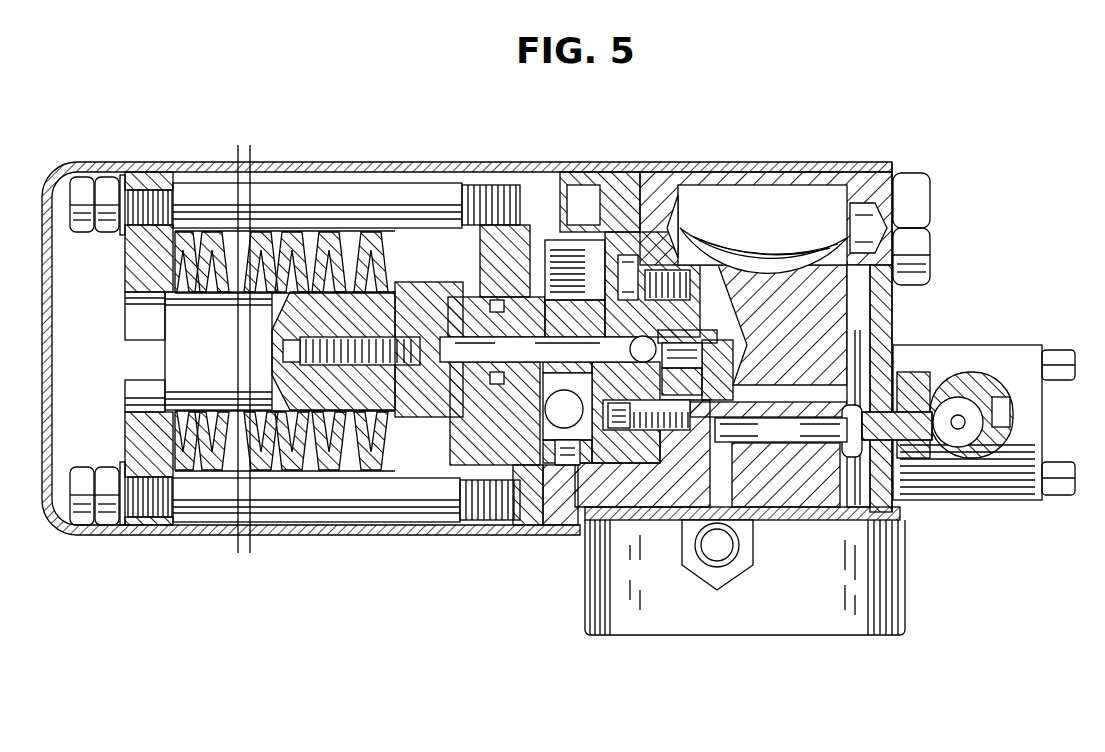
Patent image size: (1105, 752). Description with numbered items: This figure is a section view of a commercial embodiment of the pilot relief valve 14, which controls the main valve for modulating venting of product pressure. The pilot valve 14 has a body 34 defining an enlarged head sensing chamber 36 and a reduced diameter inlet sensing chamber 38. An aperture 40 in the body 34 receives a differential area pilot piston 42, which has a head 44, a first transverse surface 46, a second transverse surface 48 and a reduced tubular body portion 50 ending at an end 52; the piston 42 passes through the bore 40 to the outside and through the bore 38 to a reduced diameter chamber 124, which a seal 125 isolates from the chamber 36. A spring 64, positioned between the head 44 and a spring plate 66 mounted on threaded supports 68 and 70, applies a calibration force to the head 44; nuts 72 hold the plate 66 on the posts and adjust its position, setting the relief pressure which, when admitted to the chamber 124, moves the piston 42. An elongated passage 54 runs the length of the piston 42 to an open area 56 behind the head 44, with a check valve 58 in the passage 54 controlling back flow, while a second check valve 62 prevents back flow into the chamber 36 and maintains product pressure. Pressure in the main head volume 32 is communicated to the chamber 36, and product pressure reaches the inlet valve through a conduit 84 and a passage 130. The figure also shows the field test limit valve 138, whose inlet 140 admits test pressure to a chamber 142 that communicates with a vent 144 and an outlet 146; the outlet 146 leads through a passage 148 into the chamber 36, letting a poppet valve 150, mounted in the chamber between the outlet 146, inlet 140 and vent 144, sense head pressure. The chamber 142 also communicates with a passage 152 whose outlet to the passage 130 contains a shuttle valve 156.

The pilot relief valve 14 is at (303, 562).
The main head volume 32 is at (736, 220).
The body 34 is at (858, 636).
The head sensing chamber 36 is at (547, 462).
The inlet sensing chamber 38 is at (648, 430).
The aperture 40 is at (480, 432).
The differential area pilot piston 42 is at (585, 240).
The head 44 is at (432, 313).
The first transverse surface 46 is at (480, 244).
The second transverse surface 48 is at (551, 495).
The reduced tubular body portion 50 is at (650, 330).
The end 52 is at (825, 300).
The elongated passage 54 is at (527, 358).
The open area 56 is at (435, 372).
The check valve 58 is at (630, 349).
The check valve 62 is at (576, 418).
The spring 64 is at (372, 463).
The spring plate 66 is at (163, 260).
The threaded support 68 is at (388, 186).
The threaded support 70 is at (282, 510).
The nuts 72 is at (102, 518).
The conduit 84 is at (700, 580).
The reduced diameter chamber 124 is at (690, 364).
The seal 125 is at (628, 310).
The passage 130 is at (795, 439).
The field test limit valve 138 is at (985, 340).
The inlet 140 is at (897, 527).
The chamber 142 is at (992, 372).
The vent 144 is at (1007, 403).
The outlet 146 is at (900, 372).
The passage 148 is at (830, 285).
The poppet valve 150 is at (932, 372).
The passage 152 is at (970, 435).
The shuttle valve 156 is at (879, 448).